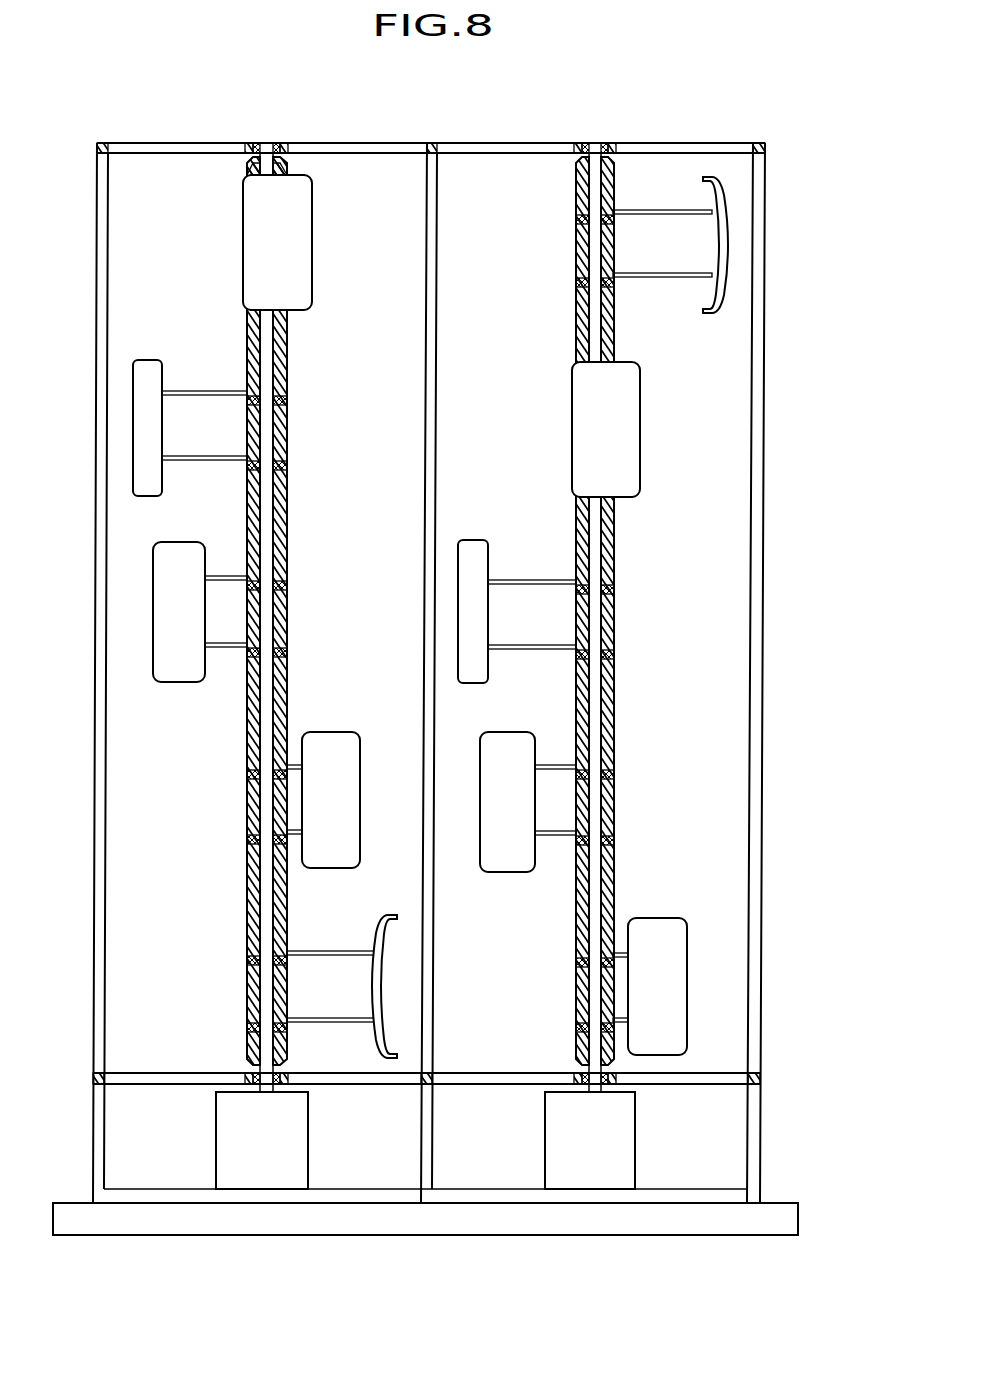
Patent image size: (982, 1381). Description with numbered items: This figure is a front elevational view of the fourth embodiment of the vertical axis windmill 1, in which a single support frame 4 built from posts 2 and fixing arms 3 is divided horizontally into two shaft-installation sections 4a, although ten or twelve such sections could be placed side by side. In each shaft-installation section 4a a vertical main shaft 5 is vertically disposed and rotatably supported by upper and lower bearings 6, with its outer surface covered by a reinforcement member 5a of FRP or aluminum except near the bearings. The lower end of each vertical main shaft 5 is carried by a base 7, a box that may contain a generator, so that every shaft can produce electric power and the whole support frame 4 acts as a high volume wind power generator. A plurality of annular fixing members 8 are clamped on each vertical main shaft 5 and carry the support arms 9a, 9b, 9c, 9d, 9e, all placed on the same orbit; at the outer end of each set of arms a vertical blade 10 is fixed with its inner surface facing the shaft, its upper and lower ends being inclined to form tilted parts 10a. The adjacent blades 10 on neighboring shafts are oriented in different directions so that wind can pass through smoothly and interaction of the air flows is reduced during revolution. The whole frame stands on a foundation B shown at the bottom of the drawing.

The vertical axis windmill 1 is at (783, 179).
The post 2 is at (108, 247).
The fixing arm 3 is at (97, 148).
The support frame 4 is at (94, 905).
The shaft-installation section 4a is at (160, 1012).
The vertical main shaft 5 is at (268, 143).
The reinforcement member 5a is at (247, 920).
The bearing 6 is at (287, 143).
The base 7 is at (276, 1157).
The fixing member 8 is at (288, 403).
The support arm 9a is at (648, 277).
The support arm 9b is at (208, 393).
The support arm 9c is at (225, 578).
The support arm 9d is at (318, 766).
The support arm 9e is at (318, 1020).
The vertical blade 10 is at (243, 240).
The tilted part 10a is at (145, 360).
The base B is at (798, 1214).